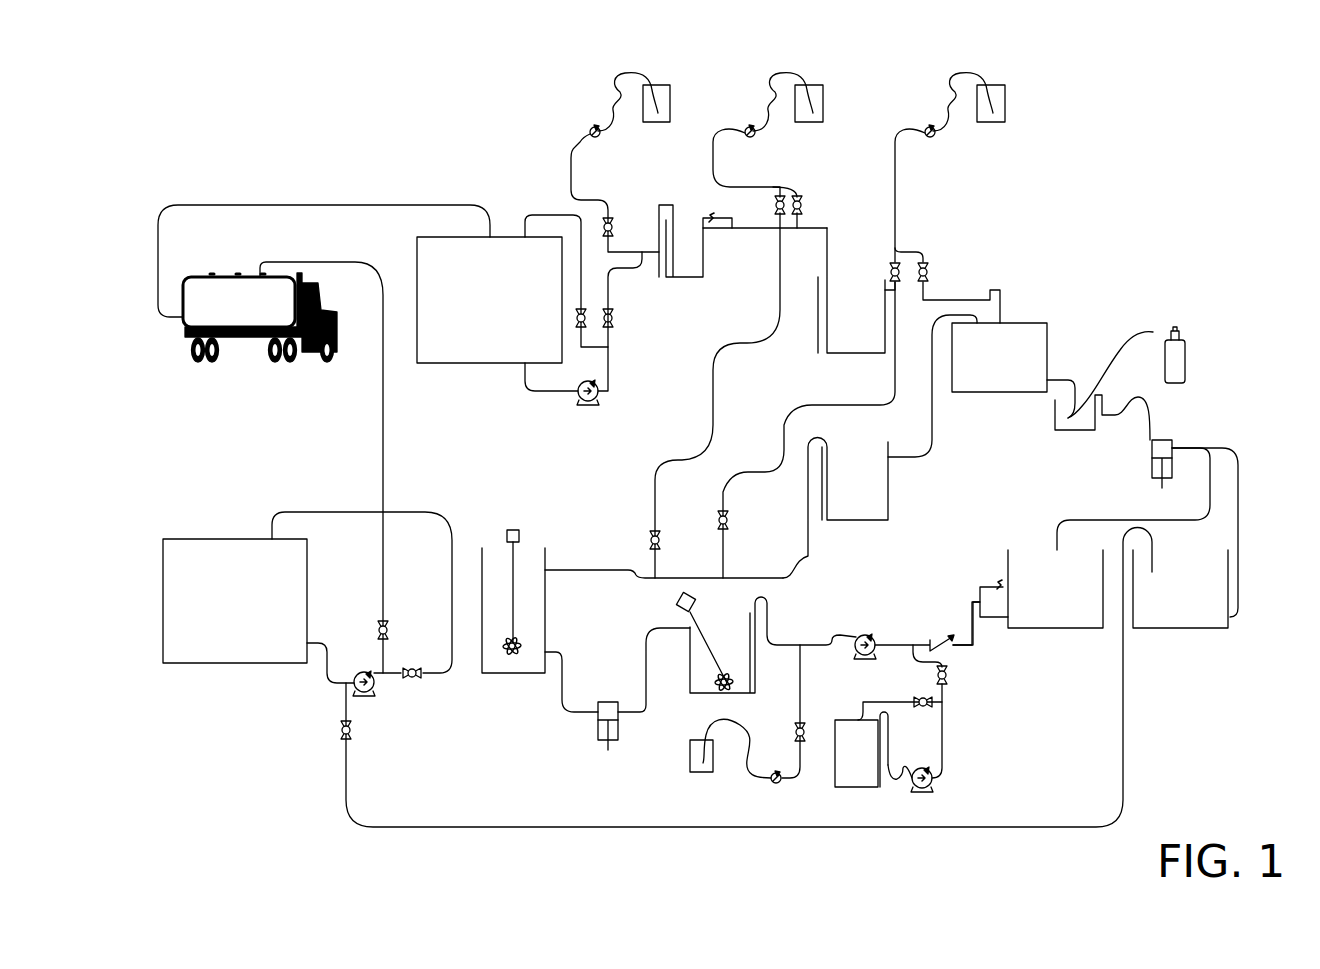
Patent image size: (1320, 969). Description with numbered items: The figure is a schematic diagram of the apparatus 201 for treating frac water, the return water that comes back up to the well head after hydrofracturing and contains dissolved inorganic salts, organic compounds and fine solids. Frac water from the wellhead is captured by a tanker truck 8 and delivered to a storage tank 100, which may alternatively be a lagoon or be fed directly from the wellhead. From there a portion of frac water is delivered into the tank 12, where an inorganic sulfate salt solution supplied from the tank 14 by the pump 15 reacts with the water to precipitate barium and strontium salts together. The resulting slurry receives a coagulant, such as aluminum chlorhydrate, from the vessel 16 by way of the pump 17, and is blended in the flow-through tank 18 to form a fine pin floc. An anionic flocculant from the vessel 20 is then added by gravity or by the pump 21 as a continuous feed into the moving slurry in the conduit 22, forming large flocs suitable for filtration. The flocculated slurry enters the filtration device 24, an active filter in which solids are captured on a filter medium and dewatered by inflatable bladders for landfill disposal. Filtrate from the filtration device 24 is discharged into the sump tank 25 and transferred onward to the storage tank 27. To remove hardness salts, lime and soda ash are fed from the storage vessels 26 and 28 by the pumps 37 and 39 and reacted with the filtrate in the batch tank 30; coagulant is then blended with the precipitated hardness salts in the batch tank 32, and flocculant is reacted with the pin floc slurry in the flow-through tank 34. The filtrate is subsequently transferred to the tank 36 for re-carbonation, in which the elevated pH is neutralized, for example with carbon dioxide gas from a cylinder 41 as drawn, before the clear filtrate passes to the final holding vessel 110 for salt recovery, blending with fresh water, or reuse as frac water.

The tanker truck 8 is at (318, 294).
The tank 12 is at (703, 263).
The tank 14 is at (672, 102).
The pump 15 is at (598, 143).
The vessel 16 is at (825, 103).
The pump 17 is at (753, 143).
The flow-through tank 18 is at (818, 305).
The vessel 20 is at (1007, 103).
The pump 21 is at (933, 143).
The conduit 22 is at (957, 298).
The filtration device 24 is at (1047, 336).
The sump tank 25 is at (1053, 410).
The storage vessel 26 is at (689, 757).
The storage tank 27 is at (1006, 565).
The storage vessel 28 is at (835, 742).
The batch tank 30 is at (690, 652).
The batch tank 32 is at (480, 647).
The flow-through tank 34 is at (888, 487).
The tank 36 is at (1175, 630).
The pump 37 is at (778, 788).
The pump 39 is at (922, 792).
The CO2 cylinder 41 is at (1187, 356).
The storage tank 100 is at (448, 365).
The final holding vessel 110 is at (205, 539).
The apparatus 201 is at (1167, 157).